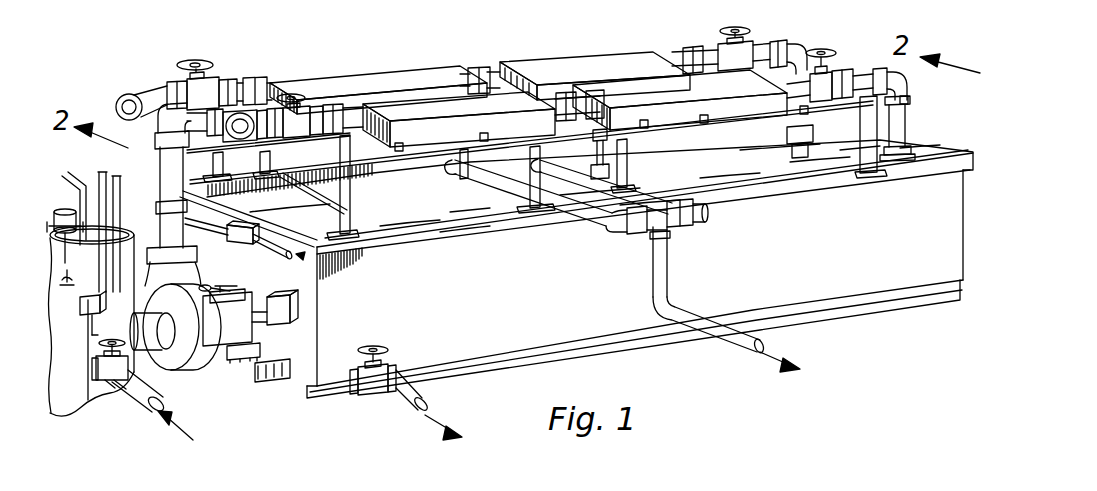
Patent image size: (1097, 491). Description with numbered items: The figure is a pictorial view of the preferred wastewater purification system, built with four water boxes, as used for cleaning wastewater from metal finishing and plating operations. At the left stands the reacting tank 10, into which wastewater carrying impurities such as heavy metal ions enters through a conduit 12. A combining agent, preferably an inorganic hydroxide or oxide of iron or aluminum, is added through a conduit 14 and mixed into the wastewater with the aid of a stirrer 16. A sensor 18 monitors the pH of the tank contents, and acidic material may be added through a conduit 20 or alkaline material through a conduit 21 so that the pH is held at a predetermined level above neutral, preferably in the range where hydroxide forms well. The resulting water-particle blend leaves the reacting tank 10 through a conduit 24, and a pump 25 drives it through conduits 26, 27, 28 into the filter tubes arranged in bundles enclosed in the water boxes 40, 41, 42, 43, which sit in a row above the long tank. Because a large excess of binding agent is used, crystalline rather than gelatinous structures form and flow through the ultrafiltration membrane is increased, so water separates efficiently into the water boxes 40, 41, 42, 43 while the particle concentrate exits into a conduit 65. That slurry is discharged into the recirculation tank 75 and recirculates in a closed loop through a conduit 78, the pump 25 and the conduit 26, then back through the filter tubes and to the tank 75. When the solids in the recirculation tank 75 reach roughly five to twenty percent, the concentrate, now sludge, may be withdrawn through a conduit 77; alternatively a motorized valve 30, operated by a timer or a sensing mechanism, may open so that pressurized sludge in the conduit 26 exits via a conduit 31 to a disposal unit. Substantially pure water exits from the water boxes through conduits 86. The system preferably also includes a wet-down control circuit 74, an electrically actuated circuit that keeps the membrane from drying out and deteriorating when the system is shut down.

The reacting tank 10 is at (70, 400).
The conduit 12 is at (141, 417).
The conduit 14 is at (80, 182).
The stirrer 16 is at (73, 211).
The sensor 18 is at (88, 408).
The conduit 20 is at (99, 172).
The conduit 21 is at (120, 176).
The conduit 24 is at (167, 370).
The pump 25 is at (197, 364).
The conduit 26 is at (168, 180).
The conduit 27 is at (150, 93).
The conduit 28 is at (238, 98).
The motorized valve 30 is at (237, 245).
The conduit 31 is at (277, 252).
The water box 40 is at (313, 80).
The water box 41 is at (397, 103).
The water box 42 is at (553, 62).
The water box 43 is at (637, 86).
The conduit 65 is at (903, 75).
The wet-down control circuit 74 is at (290, 323).
The recirculation tank 75 is at (552, 290).
The conduit 77 is at (403, 412).
The conduit 78 is at (230, 326).
The conduit 86 is at (650, 246).